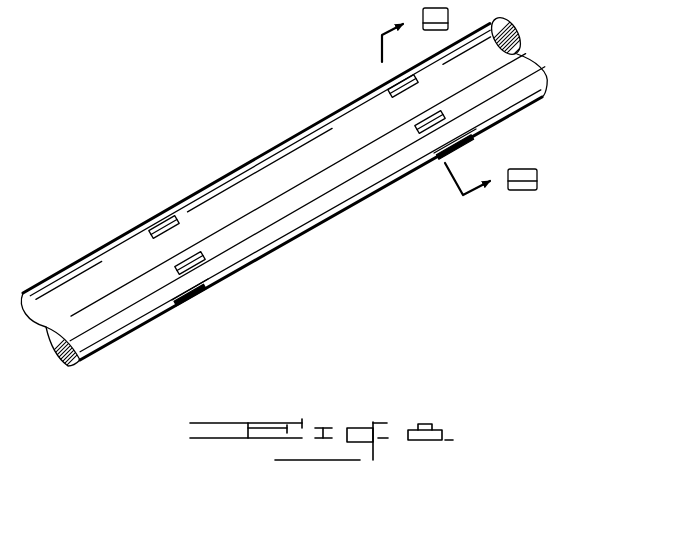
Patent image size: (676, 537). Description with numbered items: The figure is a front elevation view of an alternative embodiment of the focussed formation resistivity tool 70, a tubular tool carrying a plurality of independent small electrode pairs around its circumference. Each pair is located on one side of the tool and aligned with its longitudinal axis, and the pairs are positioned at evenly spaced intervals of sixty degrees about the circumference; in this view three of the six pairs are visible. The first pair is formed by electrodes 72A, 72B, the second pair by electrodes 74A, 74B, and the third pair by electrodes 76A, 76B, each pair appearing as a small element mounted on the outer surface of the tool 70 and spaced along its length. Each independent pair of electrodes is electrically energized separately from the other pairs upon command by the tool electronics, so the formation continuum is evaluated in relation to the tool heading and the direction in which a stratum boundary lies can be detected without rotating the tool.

The focussed formation resistivity tool 70 is at (500, 220).
The electrode 72A is at (423, 167).
The electrode 72B is at (196, 298).
The electrode 74A is at (447, 112).
The electrode 74B is at (204, 256).
The electrode 76A is at (392, 82).
The electrode 76B is at (160, 224).